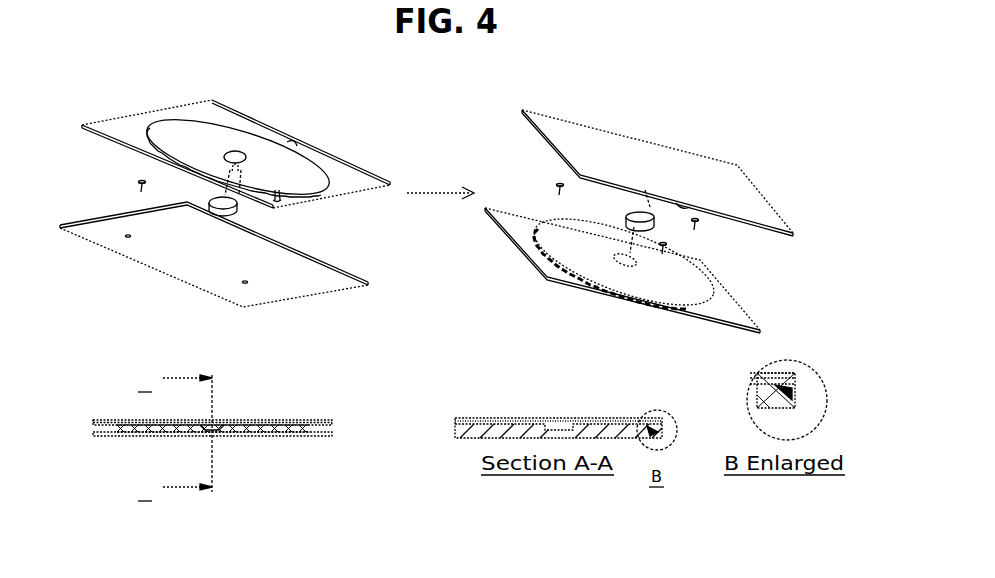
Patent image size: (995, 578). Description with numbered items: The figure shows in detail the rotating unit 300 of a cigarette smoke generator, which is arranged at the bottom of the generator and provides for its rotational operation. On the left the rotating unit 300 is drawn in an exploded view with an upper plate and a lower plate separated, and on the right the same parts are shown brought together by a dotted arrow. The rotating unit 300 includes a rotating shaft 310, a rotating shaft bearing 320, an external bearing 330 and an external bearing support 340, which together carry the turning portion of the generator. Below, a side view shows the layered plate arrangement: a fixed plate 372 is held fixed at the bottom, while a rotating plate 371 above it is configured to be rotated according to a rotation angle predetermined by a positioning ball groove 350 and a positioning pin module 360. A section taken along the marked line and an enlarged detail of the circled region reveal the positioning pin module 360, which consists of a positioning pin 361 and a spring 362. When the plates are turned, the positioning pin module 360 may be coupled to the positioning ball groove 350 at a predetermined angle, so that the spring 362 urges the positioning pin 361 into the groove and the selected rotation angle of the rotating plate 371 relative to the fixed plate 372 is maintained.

The rotating unit 300 is at (437, 97).
The rotating shaft 310 is at (230, 158).
The rotating shaft bearing 320 is at (242, 207).
The external bearing 330 is at (136, 184).
The external bearing support 340 is at (158, 153).
The positioning ball groove 350 is at (93, 428).
The positioning pin module 360 is at (213, 433).
The positioning pin 361 is at (772, 382).
The spring 362 is at (790, 392).
The rotating plate 371 is at (104, 420).
The fixed plate 372 is at (104, 437).